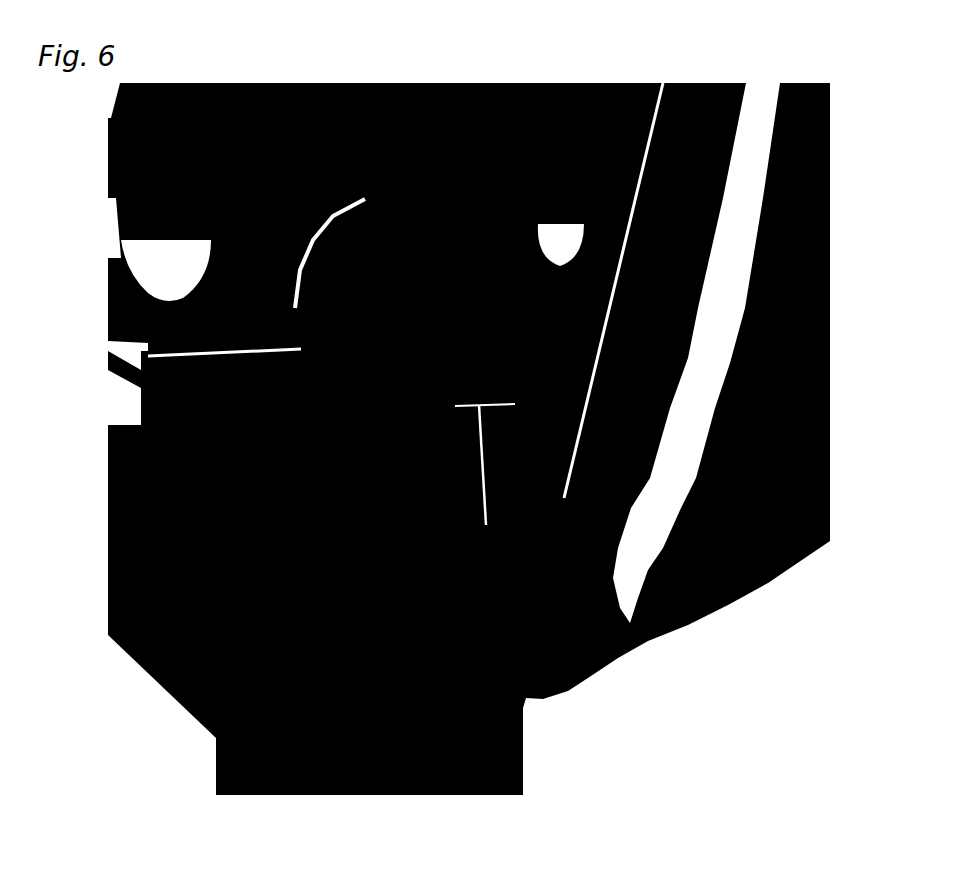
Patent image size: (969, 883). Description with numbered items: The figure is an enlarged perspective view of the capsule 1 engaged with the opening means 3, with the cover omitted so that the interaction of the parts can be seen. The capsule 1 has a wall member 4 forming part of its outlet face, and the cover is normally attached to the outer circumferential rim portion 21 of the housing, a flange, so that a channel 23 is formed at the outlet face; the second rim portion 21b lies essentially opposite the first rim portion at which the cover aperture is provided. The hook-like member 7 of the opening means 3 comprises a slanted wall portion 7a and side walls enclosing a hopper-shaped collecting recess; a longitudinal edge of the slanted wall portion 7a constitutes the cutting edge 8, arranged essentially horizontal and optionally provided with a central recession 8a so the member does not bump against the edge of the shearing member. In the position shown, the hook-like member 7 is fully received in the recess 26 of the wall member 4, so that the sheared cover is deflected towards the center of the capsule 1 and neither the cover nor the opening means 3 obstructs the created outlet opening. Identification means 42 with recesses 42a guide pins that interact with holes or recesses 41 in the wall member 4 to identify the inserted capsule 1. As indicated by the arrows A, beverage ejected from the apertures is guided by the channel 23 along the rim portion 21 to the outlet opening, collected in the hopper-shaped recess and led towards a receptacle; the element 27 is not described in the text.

The capsule 1 is at (798, 550).
The opening means 3 is at (167, 693).
The wall member 4 is at (618, 90).
The holes or recesses 41 is at (540, 170).
The identification means 42 is at (130, 437).
The recesses 42a is at (150, 258).
The hook-like member 7 is at (488, 326).
The slanted wall portion 7a is at (480, 304).
The cutting edge 8 is at (505, 440).
The central recession 8a is at (512, 378).
The outer circumferential rim portion 21 is at (726, 259).
The second rim portion 21b is at (533, 690).
The channel 23 is at (710, 604).
The recess 26 is at (490, 302).
The groove 27 is at (500, 540).
The arrows A is at (660, 390).